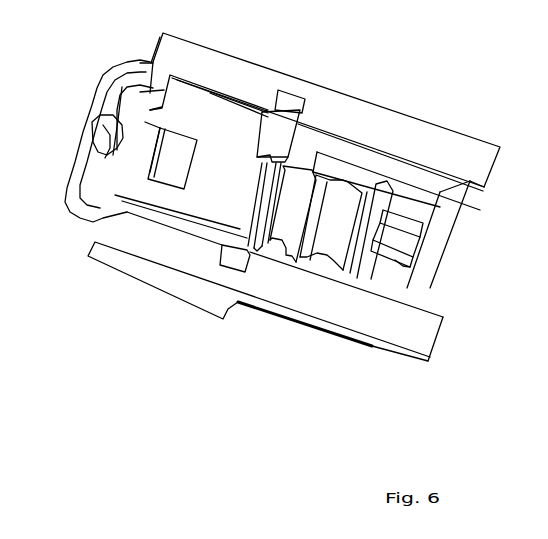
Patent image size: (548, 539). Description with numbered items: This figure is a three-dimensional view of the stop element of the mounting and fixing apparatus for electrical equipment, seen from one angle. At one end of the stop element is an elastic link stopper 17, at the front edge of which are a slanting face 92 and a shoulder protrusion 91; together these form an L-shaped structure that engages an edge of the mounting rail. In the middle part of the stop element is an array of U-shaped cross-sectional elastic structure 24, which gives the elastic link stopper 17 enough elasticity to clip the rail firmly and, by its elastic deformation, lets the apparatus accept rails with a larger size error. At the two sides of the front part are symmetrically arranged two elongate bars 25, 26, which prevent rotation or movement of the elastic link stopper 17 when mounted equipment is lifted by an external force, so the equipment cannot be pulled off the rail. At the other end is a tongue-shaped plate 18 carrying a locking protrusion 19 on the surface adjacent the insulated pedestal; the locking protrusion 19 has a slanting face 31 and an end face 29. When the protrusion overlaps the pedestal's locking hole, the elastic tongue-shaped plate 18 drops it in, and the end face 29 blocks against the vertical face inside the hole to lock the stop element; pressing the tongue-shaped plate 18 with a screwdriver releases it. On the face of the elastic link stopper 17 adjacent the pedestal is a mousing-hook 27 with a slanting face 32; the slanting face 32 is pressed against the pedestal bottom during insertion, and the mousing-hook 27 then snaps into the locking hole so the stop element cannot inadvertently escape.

The elastic link stopper 17 is at (383, 277).
The tongue-shaped plate 18 is at (142, 146).
The locking protrusion 19 is at (137, 178).
The U-shaped cross-sectional elastic structure 24 is at (262, 258).
The elongate bar 25 is at (297, 260).
The elongate bar 26 is at (346, 163).
The mousing-hook 27 is at (412, 267).
The end face 29 is at (135, 170).
The slanting face 31 is at (173, 160).
The slanting face 32 is at (406, 245).
The shoulder protrusion 91 is at (437, 208).
The slanting face 92 is at (428, 252).